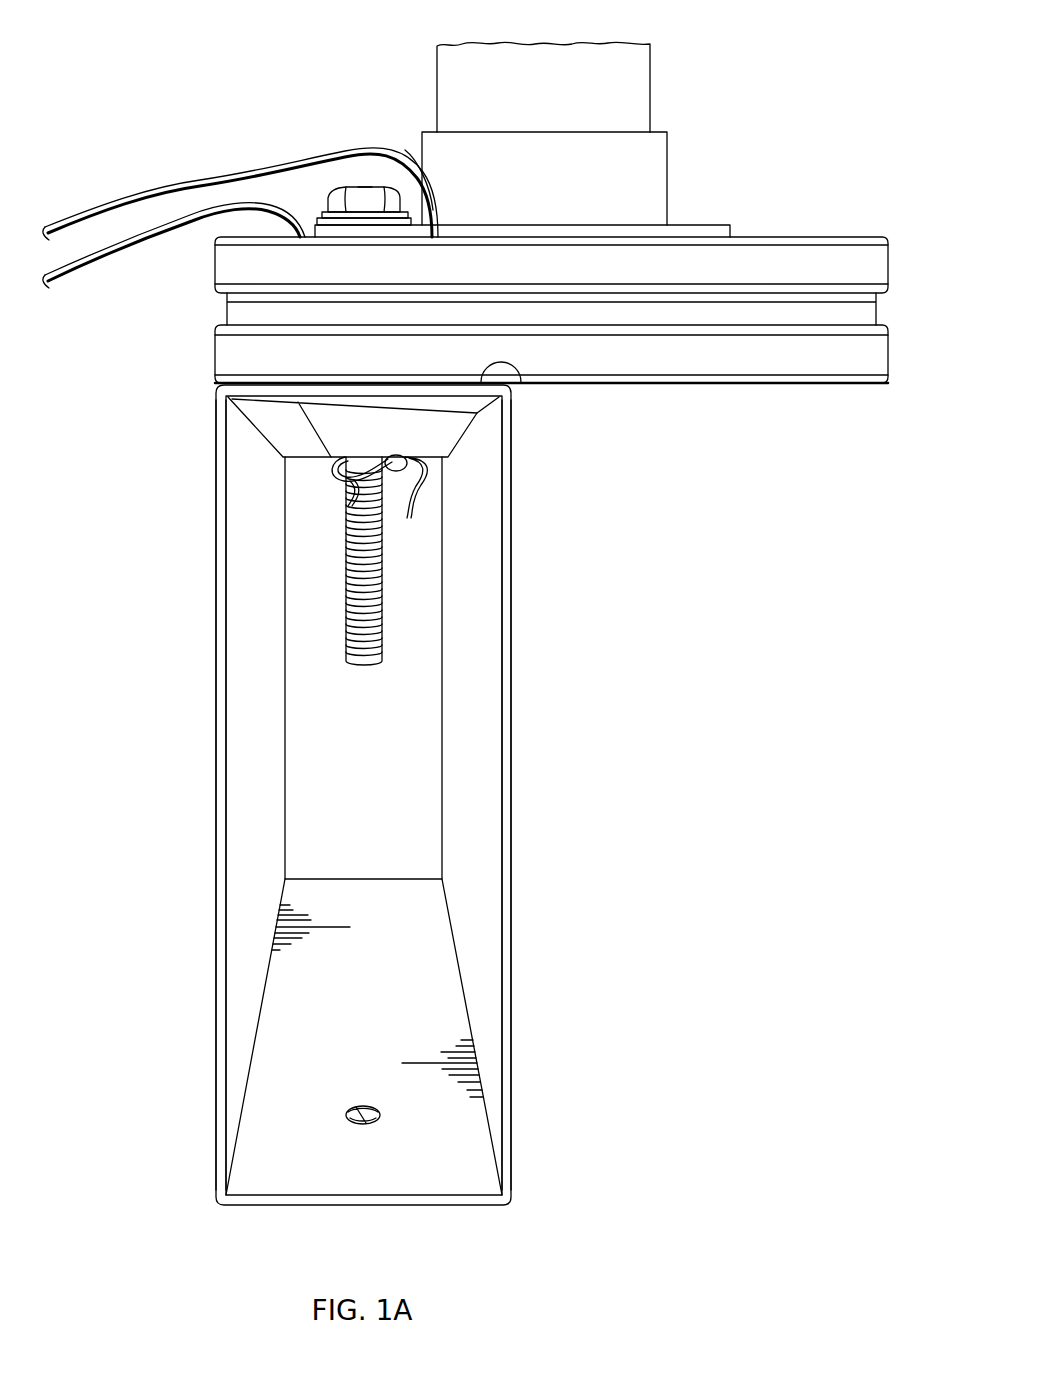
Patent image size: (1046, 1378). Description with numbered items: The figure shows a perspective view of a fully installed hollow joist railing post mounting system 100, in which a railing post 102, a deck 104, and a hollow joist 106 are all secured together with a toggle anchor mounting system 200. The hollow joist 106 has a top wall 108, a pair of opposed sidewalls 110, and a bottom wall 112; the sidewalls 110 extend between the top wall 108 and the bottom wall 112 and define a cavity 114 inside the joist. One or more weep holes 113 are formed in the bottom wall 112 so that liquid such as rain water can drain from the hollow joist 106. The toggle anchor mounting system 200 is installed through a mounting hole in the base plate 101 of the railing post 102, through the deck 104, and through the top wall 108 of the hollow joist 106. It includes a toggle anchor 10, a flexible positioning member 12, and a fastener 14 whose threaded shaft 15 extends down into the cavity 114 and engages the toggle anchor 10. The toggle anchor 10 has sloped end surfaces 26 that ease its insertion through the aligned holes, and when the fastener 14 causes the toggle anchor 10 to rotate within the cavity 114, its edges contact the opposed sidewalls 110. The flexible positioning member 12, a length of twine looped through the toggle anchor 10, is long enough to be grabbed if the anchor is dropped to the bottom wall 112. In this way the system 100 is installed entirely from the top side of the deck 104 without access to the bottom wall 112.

The hollow joist railing post mounting system 100 is at (236, 58).
The toggle anchor mounting system 200 is at (377, 136).
The flexible positioning member 12 is at (222, 206).
The fastener 14 is at (355, 185).
The railing post 102 is at (688, 152).
The base plate 101 is at (702, 223).
The deck 104 is at (893, 263).
The top wall 108 is at (514, 383).
The toggle anchor 10 is at (265, 438).
The end surfaces 26 is at (300, 447).
The pair of opposed sidewalls 110 is at (213, 578).
The threaded shaft 15 is at (345, 655).
The cavity 114 is at (488, 709).
The hollow joist 106 is at (172, 986).
The weep holes 113 is at (364, 1105).
The bottom wall 112 is at (364, 1208).